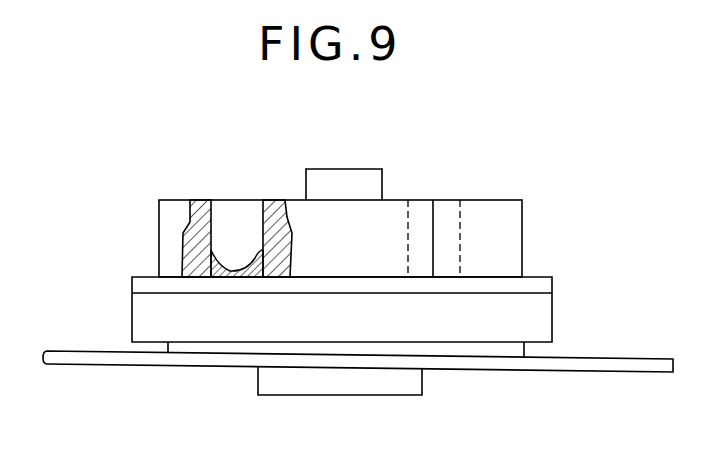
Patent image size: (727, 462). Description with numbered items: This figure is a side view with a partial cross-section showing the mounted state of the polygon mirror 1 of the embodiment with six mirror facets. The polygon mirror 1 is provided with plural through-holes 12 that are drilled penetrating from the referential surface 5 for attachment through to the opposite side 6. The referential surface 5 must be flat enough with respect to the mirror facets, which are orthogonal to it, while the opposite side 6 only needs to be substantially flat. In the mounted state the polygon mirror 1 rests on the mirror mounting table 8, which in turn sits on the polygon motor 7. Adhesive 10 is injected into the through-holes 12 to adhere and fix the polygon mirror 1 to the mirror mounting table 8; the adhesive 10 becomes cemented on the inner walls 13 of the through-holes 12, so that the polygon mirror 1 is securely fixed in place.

The polygon mirror 1 is at (497, 237).
The referential surface for attachment 5 is at (168, 270).
The boss / upper block 6 is at (485, 200).
The polygon motor 7 is at (545, 328).
The mirror mounting table 8 is at (550, 284).
The adhesive 10 is at (217, 279).
The through-holes 12 is at (252, 199).
The inner walls 13 is at (217, 242).